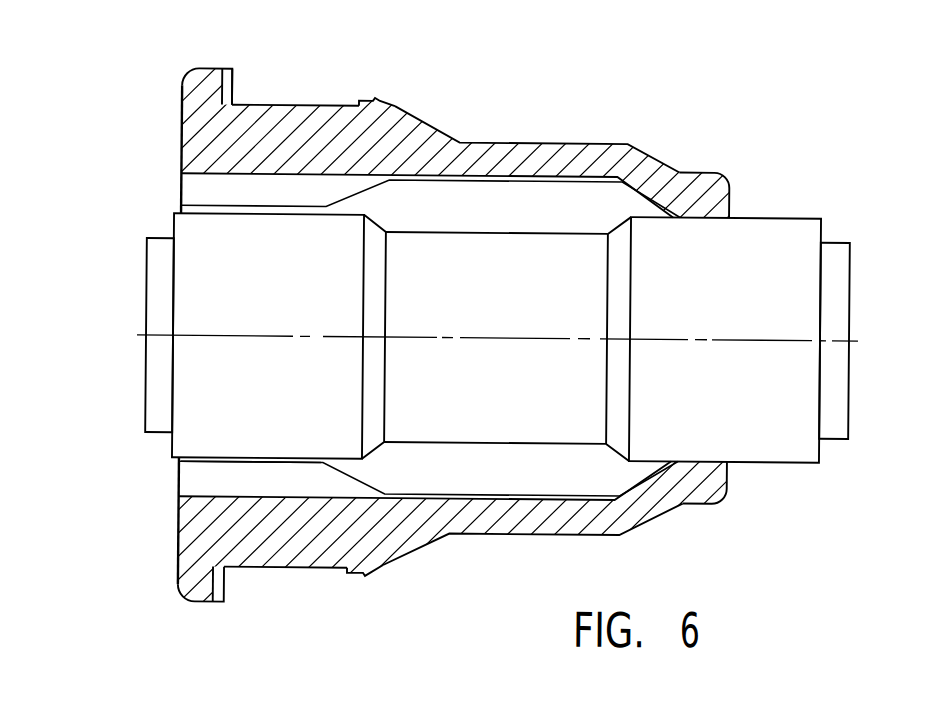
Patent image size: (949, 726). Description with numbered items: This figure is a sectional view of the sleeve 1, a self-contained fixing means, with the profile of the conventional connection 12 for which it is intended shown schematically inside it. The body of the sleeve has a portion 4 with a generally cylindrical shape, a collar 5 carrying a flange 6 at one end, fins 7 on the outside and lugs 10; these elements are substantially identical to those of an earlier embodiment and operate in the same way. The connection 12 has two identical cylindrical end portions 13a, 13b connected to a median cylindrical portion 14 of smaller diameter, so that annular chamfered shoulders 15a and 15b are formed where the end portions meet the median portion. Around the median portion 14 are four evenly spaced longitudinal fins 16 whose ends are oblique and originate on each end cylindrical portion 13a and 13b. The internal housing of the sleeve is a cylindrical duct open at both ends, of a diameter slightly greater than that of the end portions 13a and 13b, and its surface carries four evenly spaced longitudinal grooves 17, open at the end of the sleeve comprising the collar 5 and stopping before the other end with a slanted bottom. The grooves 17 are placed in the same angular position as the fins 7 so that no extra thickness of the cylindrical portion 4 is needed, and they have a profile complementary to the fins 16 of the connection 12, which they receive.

The sleeve 1 is at (456, 322).
The portion with a generally cylindrical shape 4 is at (703, 498).
The collar 5 is at (183, 146).
The flange 6 is at (226, 84).
The fins 7 is at (359, 82).
The lugs 10 is at (367, 574).
The connection 12 is at (505, 288).
The end cylindrical portion 13a is at (175, 415).
The end cylindrical portion 13b is at (793, 401).
The median cylindrical portion 14 is at (528, 387).
The annular chamfered shoulder 15a is at (380, 348).
The annular chamfered shoulder 15b is at (616, 434).
The longitudinal fins 16 is at (477, 222).
The longitudinal grooves 17 is at (189, 485).